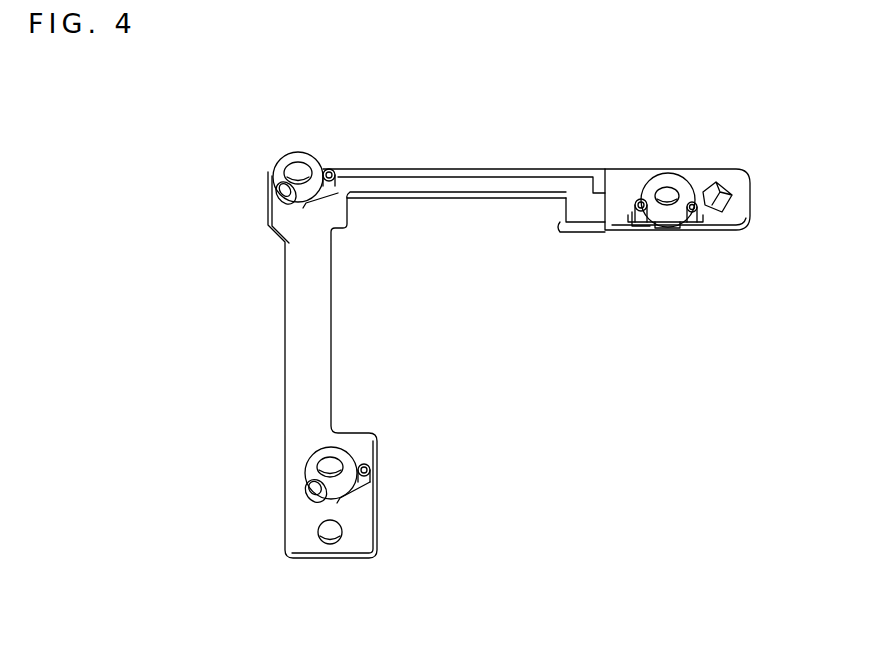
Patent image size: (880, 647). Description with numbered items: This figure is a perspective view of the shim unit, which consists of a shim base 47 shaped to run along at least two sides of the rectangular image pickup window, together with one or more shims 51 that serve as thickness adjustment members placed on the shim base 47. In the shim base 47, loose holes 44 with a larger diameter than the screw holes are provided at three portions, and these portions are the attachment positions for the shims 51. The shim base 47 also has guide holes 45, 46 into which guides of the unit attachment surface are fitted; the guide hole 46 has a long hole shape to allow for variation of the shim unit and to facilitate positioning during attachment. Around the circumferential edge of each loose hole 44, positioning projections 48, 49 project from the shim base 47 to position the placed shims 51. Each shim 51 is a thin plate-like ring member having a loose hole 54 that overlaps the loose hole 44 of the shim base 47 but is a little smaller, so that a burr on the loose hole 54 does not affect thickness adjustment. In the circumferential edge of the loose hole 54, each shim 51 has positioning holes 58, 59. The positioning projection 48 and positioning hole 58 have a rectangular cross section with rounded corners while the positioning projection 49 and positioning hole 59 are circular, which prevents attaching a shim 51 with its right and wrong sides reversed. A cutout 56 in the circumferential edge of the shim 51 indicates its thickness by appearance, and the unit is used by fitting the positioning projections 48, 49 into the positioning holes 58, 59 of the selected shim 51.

The loose hole 44 is at (294, 163).
The guide hole 45 is at (318, 532).
The guide hole 46 is at (726, 188).
The shim base 47 is at (300, 334).
The positioning projection 48 is at (278, 182).
The positioning projection 49 is at (332, 167).
The shim 51 is at (317, 152).
The loose hole 54 is at (301, 157).
The cutout 56 is at (306, 200).
The positioning hole 58 is at (276, 201).
The positioning hole 59 is at (338, 192).